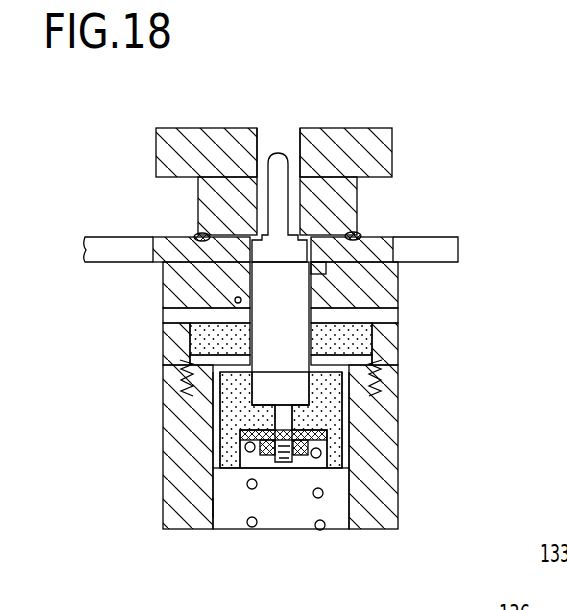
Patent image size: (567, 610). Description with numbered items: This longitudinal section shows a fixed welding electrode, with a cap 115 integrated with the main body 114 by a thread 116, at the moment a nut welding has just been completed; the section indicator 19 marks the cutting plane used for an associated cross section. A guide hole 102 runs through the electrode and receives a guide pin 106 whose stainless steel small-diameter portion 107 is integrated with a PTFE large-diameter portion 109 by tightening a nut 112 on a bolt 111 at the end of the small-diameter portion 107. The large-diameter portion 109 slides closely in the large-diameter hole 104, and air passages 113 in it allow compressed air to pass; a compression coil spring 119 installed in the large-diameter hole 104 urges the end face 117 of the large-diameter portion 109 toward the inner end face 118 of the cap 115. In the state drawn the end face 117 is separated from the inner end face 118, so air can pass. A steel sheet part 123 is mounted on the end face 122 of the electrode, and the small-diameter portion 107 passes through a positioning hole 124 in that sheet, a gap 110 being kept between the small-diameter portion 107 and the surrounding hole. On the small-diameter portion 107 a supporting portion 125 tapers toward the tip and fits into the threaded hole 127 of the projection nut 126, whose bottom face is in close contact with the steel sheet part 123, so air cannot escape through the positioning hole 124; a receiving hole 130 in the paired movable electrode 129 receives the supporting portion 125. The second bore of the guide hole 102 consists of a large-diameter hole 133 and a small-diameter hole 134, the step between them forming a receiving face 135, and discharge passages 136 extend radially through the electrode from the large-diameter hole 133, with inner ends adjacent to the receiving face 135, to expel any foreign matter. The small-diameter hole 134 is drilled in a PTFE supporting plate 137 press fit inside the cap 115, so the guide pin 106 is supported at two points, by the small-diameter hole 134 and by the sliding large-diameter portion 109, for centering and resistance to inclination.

The section line 19- 19 is at (117, 318).
The guide hole 102 is at (224, 508).
The large-diameter hole 104 is at (343, 495).
The guide pin 106 is at (302, 197).
The small-diameter portion 107 is at (299, 302).
The large-diameter portion 109 is at (338, 417).
The gap 110 is at (237, 275).
The bolt 111 is at (282, 462).
The nut 112 is at (263, 458).
The air passages 113 is at (215, 455).
The main body 114 is at (160, 520).
The cap 115 is at (163, 345).
The thread 116 is at (187, 380).
The end face 117 is at (385, 368).
The inner end face 118 is at (205, 408).
The compression coil spring 119 is at (343, 527).
The end face 122 is at (383, 233).
The steel sheet part 123 is at (450, 245).
The positioning hole 124 is at (345, 268).
The supporting portion 125 is at (279, 152).
The projection nut 126 is at (188, 195).
The threaded hole 127 is at (258, 214).
The electrode 129 is at (152, 148).
The receiving hole 130 is at (267, 135).
The large-diameter hole 133 is at (235, 300).
The small-diameter hole 134 is at (258, 348).
The receiving face 135 is at (368, 343).
The discharge passages 136 is at (388, 313).
The supporting plate 137 is at (193, 363).